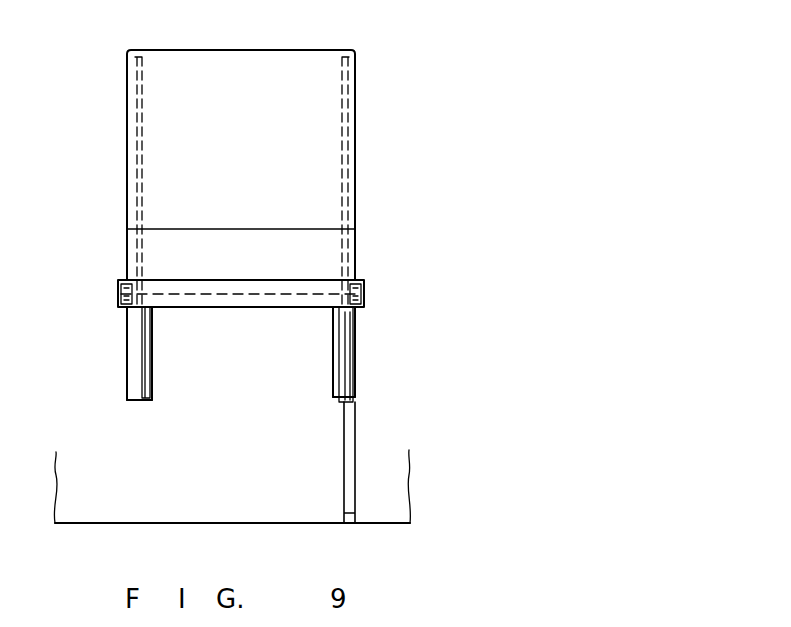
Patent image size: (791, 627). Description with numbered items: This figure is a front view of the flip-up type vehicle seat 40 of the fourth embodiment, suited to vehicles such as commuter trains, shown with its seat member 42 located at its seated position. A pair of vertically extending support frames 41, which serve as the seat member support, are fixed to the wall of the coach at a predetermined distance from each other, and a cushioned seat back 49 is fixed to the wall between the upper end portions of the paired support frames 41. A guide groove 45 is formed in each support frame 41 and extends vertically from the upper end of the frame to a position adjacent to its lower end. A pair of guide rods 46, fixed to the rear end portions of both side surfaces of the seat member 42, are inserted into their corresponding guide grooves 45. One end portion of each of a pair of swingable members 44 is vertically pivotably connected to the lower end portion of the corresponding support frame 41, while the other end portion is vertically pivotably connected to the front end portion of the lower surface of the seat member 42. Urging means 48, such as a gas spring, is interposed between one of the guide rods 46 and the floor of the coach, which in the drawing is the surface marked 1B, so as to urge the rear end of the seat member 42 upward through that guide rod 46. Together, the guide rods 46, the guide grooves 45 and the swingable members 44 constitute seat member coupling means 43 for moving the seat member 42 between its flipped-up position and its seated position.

The base / floor 1B is at (388, 477).
The vehicle seat 40 is at (364, 153).
The cushioned seat back 49 is at (285, 65).
The guide groove 45 is at (127, 248).
The seat member 42 is at (243, 307).
The guide rods 46 is at (118, 283).
The support frames 41 is at (132, 352).
The swingable members 44 is at (150, 357).
The seat member coupling means 43 is at (148, 403).
The urging means 48 is at (344, 486).